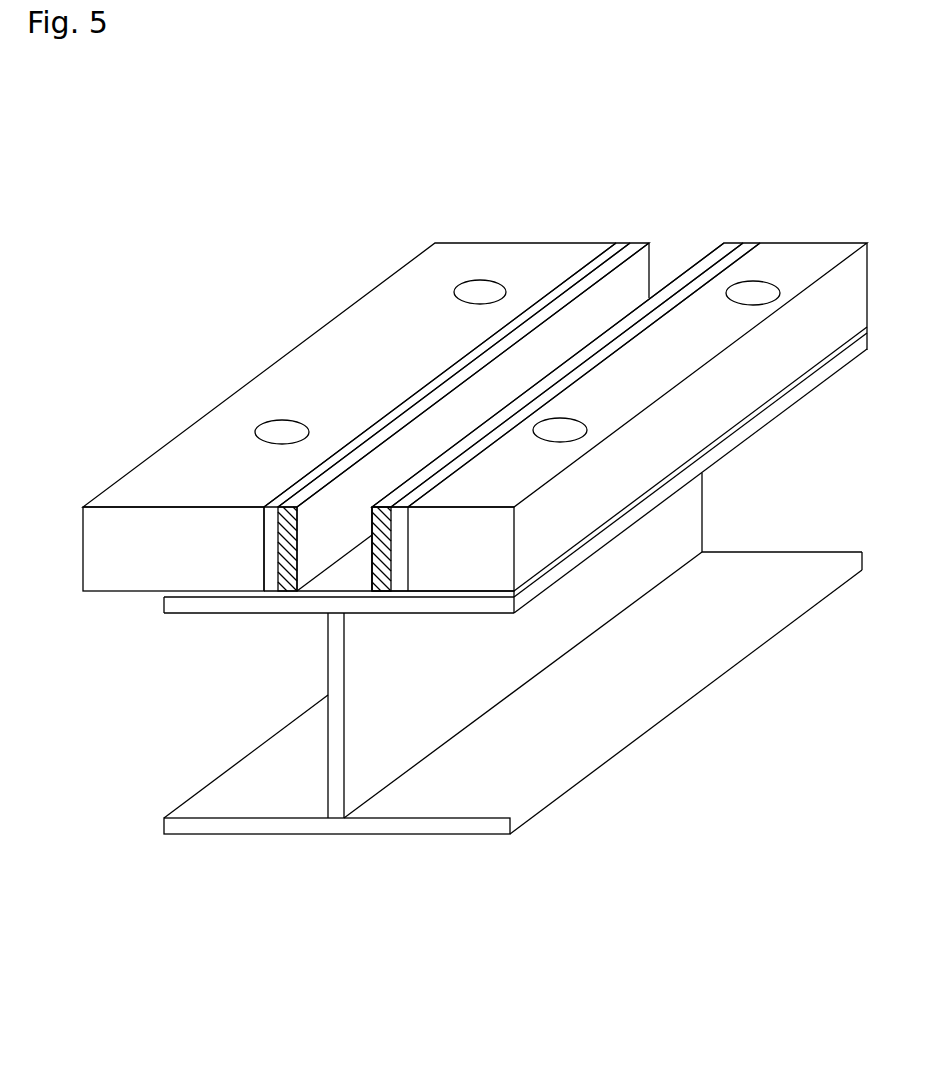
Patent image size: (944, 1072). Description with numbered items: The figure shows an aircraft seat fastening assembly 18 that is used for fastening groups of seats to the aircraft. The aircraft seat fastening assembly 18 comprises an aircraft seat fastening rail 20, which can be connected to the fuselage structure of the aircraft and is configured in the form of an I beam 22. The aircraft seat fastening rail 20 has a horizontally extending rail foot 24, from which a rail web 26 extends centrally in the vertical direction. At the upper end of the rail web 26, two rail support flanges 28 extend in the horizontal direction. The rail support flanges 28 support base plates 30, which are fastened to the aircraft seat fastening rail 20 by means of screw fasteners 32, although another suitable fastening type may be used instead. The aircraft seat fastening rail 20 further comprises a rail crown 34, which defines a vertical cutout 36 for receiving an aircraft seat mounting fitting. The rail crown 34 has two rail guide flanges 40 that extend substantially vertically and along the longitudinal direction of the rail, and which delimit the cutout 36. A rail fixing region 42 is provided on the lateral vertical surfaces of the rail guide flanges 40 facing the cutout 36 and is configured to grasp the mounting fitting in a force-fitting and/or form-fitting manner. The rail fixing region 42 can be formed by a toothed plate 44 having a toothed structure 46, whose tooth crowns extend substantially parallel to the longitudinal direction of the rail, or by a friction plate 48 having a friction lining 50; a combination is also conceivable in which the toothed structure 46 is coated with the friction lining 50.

The aircraft seat fastening assembly 18 is at (153, 127).
The aircraft seat fastening rail 20 is at (247, 239).
The I beam 22 is at (325, 866).
The rail foot 24 is at (588, 732).
The rail web 26 is at (328, 728).
The rail support flanges 28 is at (208, 605).
The base plates 30 is at (350, 327).
The screw fasteners 32 is at (477, 292).
The rail crown 34 is at (300, 458).
The vertical cutout 36 is at (355, 578).
The rail guide flanges 40 is at (272, 543).
The rail fixing region 42 is at (443, 410).
The toothed plate 44 is at (390, 452).
The toothed structure 46 is at (508, 366).
The friction plate 48 is at (633, 275).
The friction lining 50 is at (683, 277).